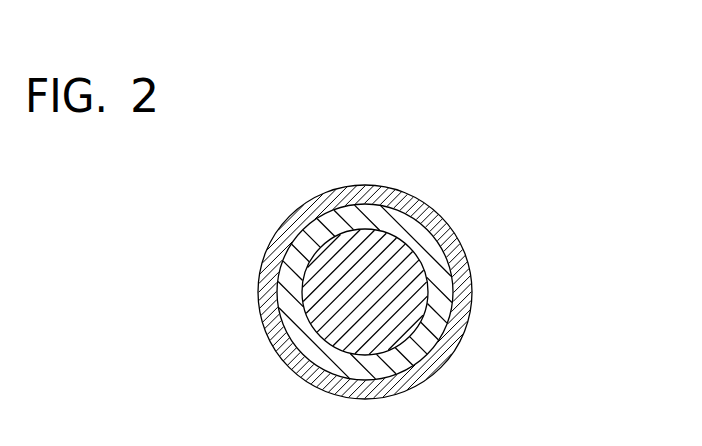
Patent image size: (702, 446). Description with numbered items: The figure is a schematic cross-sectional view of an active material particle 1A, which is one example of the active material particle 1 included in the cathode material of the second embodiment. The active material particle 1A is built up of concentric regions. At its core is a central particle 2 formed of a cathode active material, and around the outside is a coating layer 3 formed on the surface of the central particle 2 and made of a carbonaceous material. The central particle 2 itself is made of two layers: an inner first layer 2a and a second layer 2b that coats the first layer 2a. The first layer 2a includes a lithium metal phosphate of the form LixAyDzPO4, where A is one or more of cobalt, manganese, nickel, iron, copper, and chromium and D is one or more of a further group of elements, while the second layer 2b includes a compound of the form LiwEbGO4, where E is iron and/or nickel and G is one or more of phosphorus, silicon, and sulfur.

The active material particle 1A is at (433, 181).
The active material particle 1 is at (423, 257).
The central particle 2 is at (548, 263).
The first layer 2a is at (405, 308).
The second layer 2b is at (440, 283).
The coating layer 3 is at (437, 222).